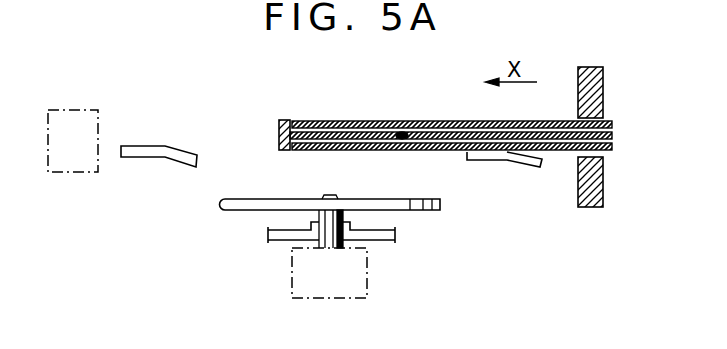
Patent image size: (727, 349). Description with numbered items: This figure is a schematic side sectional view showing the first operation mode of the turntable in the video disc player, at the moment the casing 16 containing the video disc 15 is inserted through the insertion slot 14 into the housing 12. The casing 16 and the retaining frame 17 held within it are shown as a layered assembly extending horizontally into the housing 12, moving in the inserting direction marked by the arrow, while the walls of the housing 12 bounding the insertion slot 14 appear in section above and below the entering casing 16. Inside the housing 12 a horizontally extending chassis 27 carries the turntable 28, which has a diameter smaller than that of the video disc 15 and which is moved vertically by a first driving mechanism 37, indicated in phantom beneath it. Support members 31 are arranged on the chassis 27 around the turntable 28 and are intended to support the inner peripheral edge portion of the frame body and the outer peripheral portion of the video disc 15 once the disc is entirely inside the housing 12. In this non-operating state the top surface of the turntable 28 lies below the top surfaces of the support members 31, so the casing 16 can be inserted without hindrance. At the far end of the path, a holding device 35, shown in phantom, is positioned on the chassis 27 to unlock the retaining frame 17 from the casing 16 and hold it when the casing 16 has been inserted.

The housing 12 is at (603, 181).
The insertion slot 14 is at (608, 100).
The video disc 15 is at (402, 133).
The casing 16 is at (332, 123).
The retaining frame 17 is at (339, 149).
The chassis 27 is at (380, 230).
The turntable 28 is at (232, 211).
The support members 31 is at (504, 162).
The holding device 35 is at (98, 128).
The first driving mechanism 37 is at (368, 290).